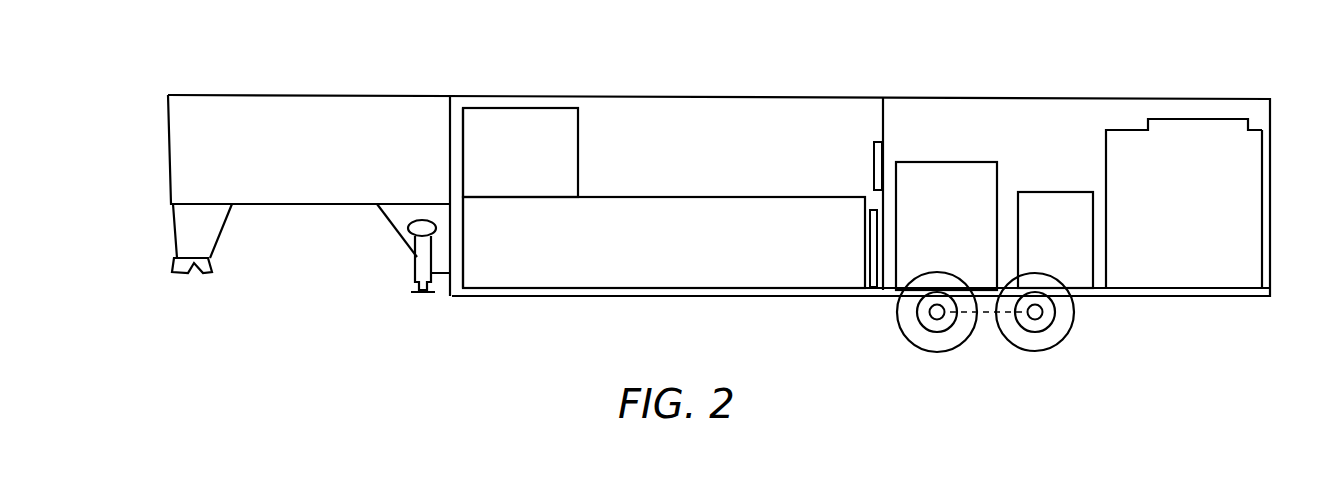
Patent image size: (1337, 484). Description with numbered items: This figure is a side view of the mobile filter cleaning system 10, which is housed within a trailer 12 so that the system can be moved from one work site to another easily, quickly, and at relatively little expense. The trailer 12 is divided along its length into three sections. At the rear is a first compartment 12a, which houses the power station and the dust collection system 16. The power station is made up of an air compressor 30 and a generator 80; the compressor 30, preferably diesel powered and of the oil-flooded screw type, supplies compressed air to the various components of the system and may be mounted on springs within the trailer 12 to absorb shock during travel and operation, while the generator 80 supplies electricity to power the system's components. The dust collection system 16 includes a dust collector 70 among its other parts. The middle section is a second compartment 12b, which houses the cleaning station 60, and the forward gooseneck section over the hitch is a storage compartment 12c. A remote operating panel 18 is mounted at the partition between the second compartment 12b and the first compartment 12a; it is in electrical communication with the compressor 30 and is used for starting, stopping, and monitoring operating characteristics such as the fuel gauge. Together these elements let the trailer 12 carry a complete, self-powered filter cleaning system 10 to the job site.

The mobile filter cleaning system 10 is at (1170, 54).
The trailer 12 is at (656, 120).
The first compartment 12a is at (1072, 115).
The second compartment 12b is at (805, 112).
The storage compartment 12c is at (338, 112).
The dust collection system 16 is at (1231, 150).
The remote operating panel 18 is at (874, 166).
The air compressor 30 is at (948, 168).
The cleaning station 60 is at (712, 252).
The dust collector 70 is at (1228, 197).
The generator 80 is at (1040, 205).